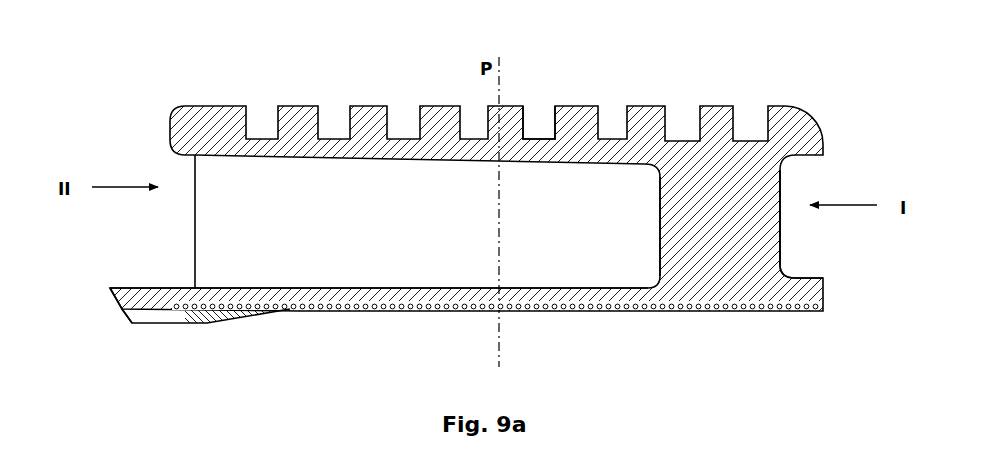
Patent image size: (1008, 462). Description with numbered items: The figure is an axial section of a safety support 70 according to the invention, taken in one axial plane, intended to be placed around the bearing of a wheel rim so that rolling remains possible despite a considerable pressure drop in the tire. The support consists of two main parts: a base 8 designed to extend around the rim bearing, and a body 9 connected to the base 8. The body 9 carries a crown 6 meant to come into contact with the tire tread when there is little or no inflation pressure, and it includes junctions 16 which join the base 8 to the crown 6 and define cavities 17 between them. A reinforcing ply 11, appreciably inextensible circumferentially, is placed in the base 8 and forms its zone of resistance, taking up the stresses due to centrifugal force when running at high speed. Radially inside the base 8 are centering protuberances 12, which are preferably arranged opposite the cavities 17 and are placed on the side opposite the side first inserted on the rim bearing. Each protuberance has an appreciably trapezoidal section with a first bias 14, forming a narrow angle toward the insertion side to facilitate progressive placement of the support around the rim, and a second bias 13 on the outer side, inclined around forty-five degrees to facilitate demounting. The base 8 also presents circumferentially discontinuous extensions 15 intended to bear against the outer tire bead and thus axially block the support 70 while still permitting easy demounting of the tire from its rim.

The support 70 is at (779, 97).
The crown 6 is at (522, 125).
The body 9 is at (702, 226).
The junctions 16 is at (735, 247).
The cavities 17 is at (403, 248).
The extensions 15 is at (132, 295).
The protuberances 12 is at (197, 320).
The second bias 13 is at (130, 320).
The first bias 14 is at (243, 318).
The base 8 is at (390, 302).
The reinforcing ply 11 is at (577, 307).